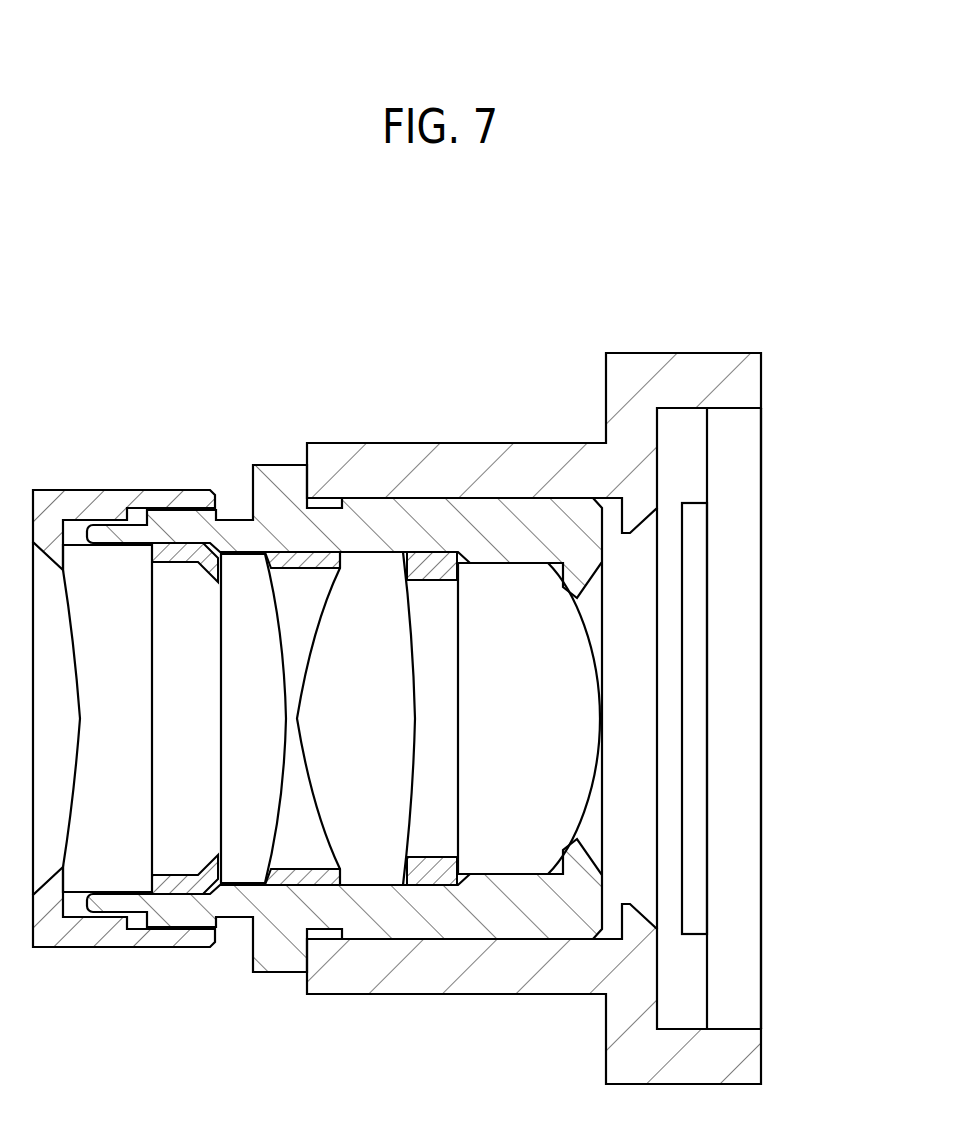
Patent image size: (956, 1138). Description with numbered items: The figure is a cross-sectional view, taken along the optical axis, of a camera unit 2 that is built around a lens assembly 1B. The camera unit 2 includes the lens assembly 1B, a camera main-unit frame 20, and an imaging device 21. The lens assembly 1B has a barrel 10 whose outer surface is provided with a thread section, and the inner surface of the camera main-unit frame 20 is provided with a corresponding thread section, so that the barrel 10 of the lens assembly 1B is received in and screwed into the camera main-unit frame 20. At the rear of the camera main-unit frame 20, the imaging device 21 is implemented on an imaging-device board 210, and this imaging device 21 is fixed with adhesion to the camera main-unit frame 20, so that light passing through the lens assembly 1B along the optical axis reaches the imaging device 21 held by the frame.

The camera unit 2 is at (439, 320).
The lens assembly 1B is at (150, 452).
The barrel 10 is at (393, 518).
The camera main-unit frame 20 is at (504, 460).
The imaging device 21 is at (695, 613).
The imaging-device board 210 is at (733, 743).